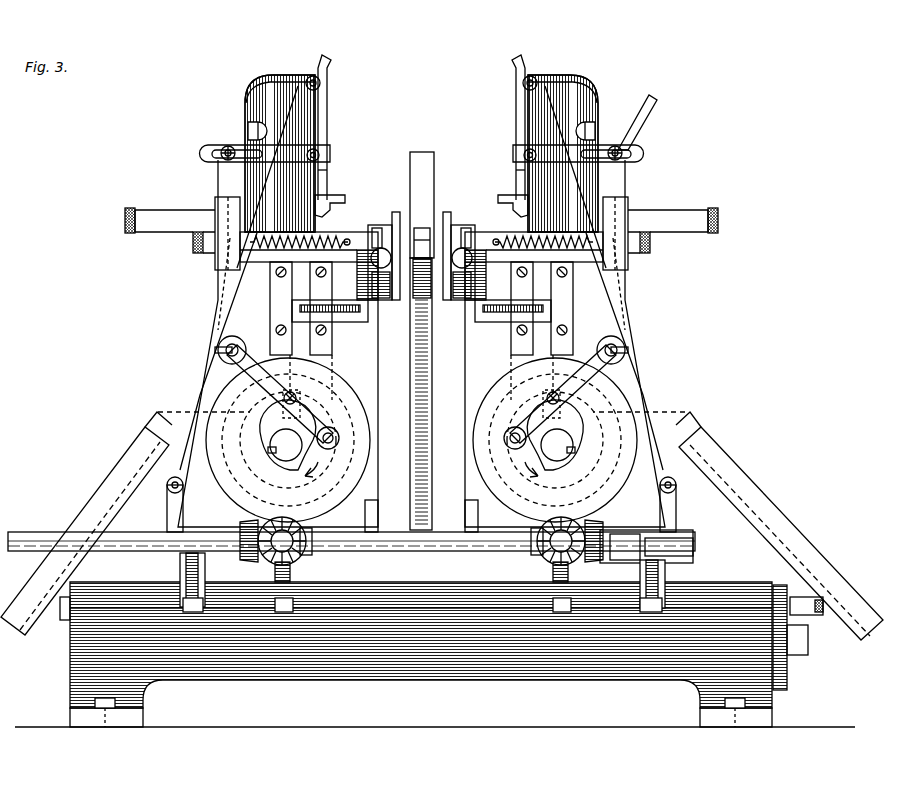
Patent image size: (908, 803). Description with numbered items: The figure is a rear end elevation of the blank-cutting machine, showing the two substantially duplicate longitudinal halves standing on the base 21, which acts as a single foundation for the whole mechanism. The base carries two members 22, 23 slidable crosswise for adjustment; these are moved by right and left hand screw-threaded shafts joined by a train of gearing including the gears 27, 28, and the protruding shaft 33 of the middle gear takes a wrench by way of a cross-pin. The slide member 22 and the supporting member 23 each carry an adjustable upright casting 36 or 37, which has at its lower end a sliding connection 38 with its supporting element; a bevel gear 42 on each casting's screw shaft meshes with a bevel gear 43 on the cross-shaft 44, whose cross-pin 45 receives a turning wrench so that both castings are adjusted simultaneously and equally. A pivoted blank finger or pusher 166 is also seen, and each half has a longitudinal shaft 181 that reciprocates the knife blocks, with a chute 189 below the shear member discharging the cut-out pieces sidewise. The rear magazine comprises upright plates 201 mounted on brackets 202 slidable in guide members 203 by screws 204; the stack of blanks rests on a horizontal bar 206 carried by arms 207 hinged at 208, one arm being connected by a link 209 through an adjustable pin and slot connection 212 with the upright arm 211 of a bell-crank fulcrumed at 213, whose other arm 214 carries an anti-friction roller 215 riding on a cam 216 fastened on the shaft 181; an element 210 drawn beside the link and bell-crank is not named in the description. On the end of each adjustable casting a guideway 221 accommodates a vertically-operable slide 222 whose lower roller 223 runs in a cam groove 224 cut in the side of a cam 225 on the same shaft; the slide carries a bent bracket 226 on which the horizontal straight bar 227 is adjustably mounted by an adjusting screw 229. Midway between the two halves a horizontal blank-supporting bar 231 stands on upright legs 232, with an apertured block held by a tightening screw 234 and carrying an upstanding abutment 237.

The base 21 is at (418, 655).
The slide member 22 is at (180, 571).
The supporting member 23 is at (667, 573).
The gear 27 is at (780, 590).
The gear 28 is at (788, 682).
The shaft 33 is at (810, 605).
The upright casting 36 is at (247, 105).
The adjustable casting 37 is at (600, 105).
The sliding connection 38 is at (203, 530).
The bevel gear 42 is at (268, 560).
The bevel gear 43 is at (302, 556).
The cross-shaft 44 is at (426, 532).
The cross-pin 45 is at (640, 538).
The blank finger or pusher 166 is at (396, 212).
The longitudinal shaft 181 is at (268, 450).
The chute 189 is at (160, 440).
The upright plate 201 is at (328, 106).
The bracket 202 is at (283, 105).
The guide member 203 is at (245, 215).
The screw 204 is at (195, 248).
The horizontal bar 206 is at (332, 203).
The arm 207 is at (322, 170).
The hinge 208 is at (322, 80).
The link 209 is at (252, 95).
The spring 210 is at (258, 248).
The upright arm 211 is at (228, 283).
The pin and slot connection 212 is at (206, 153).
The fulcrum 213 is at (216, 352).
The arm 214 is at (262, 382).
The anti-friction roller 215 is at (333, 440).
The cam 216 is at (268, 475).
The guideway 221 is at (275, 305).
The slide 222 is at (300, 343).
The roller 223 is at (284, 400).
The cam groove 224 is at (200, 410).
The cam 225 is at (200, 432).
The bent bracket 226 is at (350, 305).
The horizontal straight bar 227 is at (376, 226).
The adjusting screw 229 is at (478, 298).
The blank-supporting bar 231 is at (422, 228).
The upright legs 232 is at (418, 355).
The tightening screw 234 is at (416, 270).
The abutment 237 is at (422, 152).